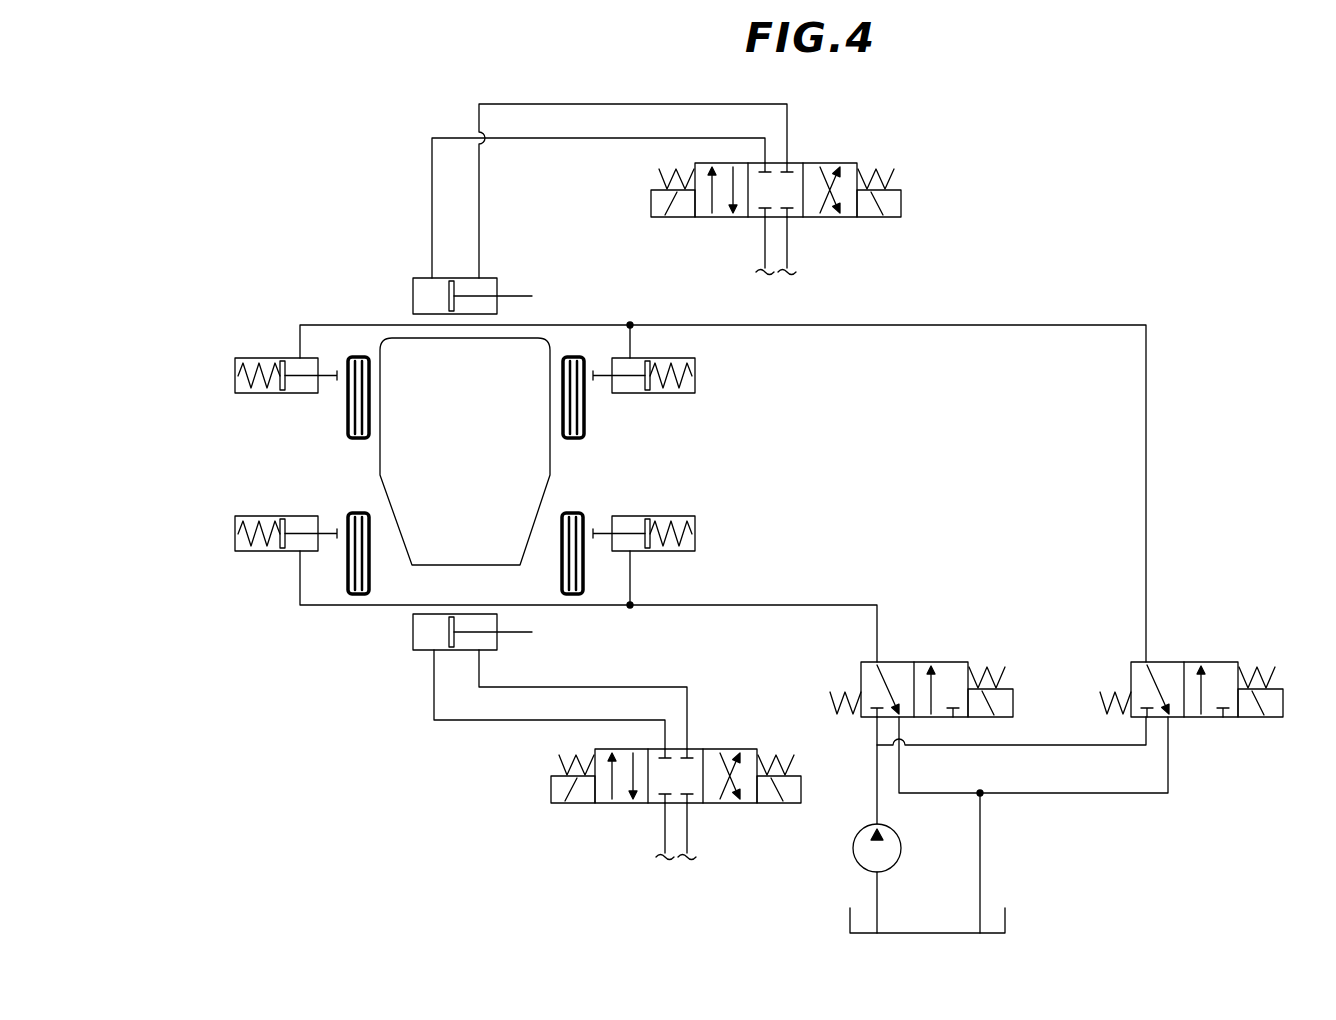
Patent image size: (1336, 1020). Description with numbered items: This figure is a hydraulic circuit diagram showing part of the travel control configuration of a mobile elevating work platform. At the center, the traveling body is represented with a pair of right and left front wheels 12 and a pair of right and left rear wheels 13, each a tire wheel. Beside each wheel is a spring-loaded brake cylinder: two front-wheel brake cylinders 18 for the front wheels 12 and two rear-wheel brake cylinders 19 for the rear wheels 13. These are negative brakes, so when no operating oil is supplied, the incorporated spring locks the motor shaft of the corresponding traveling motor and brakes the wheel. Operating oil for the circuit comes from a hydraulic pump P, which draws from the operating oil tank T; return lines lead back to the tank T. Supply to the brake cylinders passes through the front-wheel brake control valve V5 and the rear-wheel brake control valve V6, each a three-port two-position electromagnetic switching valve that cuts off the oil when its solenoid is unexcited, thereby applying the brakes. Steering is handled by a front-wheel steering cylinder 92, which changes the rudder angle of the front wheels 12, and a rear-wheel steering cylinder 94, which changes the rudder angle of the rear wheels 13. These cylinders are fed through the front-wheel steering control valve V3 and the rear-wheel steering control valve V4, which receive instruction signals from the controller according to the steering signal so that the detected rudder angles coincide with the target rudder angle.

The front wheels 12 is at (348, 520).
The rear wheels 13 is at (347, 426).
The front-wheel brake cylinders 18 is at (245, 516).
The rear-wheel brake cylinders 19 is at (248, 394).
The front-wheel steering cylinder 92 is at (413, 632).
The rear-wheel steering cylinder 94 is at (413, 290).
The front-wheel steering control valve V3 is at (745, 749).
The rear-wheel steering control valve V4 is at (845, 163).
The front-wheel brake control valve V5 is at (950, 662).
The rear-wheel brake control valve V6 is at (1222, 662).
The hydraulic pump P is at (853, 848).
The operating oil tank T is at (1005, 918).